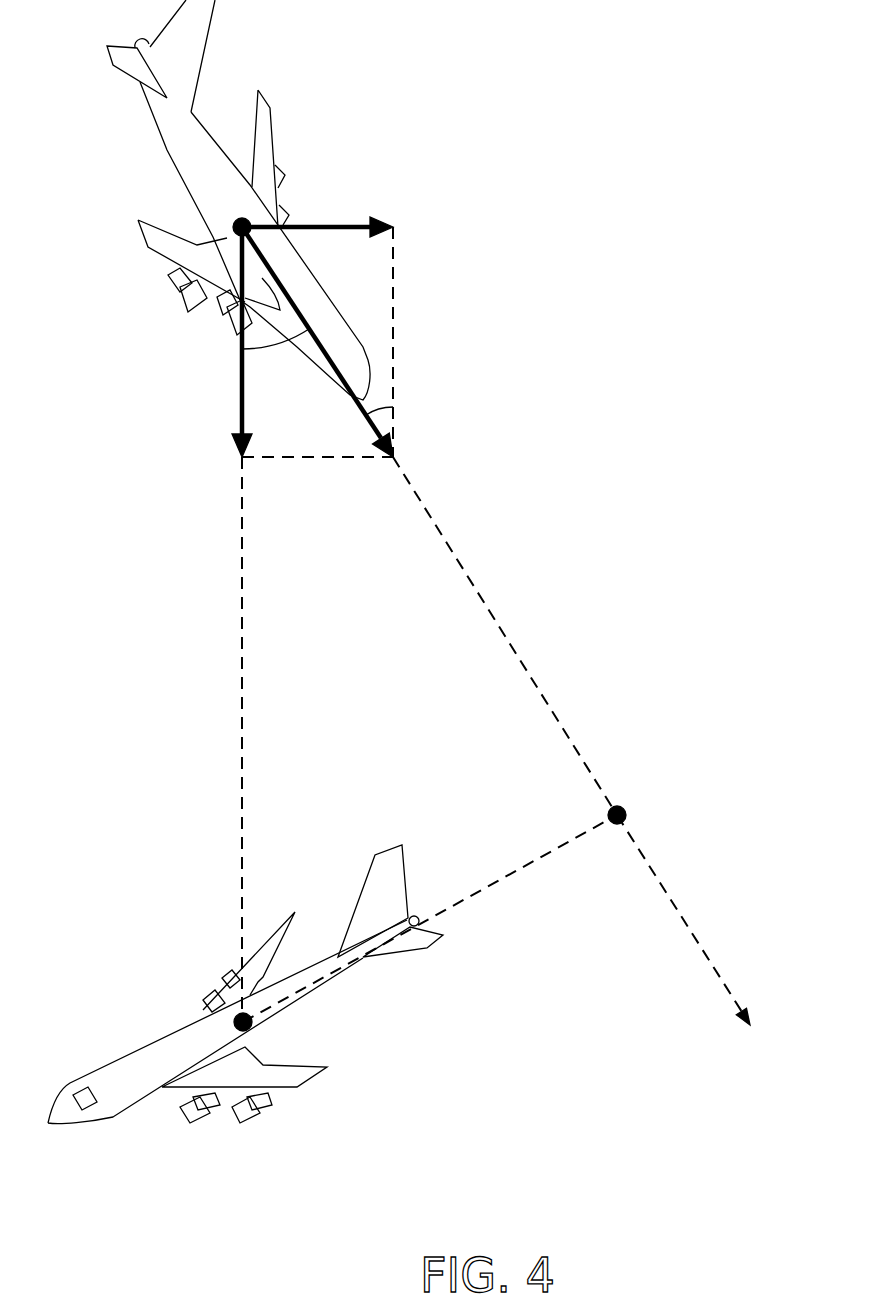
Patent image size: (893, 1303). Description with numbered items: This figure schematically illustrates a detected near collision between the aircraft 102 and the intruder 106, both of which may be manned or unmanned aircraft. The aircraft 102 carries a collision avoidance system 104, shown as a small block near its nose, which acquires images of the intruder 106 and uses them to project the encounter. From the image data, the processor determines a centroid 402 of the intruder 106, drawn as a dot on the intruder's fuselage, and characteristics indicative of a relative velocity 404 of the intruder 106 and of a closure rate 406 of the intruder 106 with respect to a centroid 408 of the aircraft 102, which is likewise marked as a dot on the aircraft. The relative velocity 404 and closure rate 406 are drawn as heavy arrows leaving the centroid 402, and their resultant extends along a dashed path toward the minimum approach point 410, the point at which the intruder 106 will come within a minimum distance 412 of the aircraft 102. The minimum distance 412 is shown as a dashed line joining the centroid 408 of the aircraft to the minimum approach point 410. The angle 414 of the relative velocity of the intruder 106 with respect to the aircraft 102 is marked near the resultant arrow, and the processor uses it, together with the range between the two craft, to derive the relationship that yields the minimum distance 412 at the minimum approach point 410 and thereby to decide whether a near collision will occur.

The aircraft 102 is at (313, 963).
The collision avoidance system 104 is at (90, 1108).
The intruder 106 is at (222, 140).
The centroid of the intruder 402 is at (233, 222).
The relative velocity of the intruder 404 is at (344, 223).
The closure rate of the intruder 406 is at (242, 373).
The centroid of the aircraft 408 is at (234, 1021).
The minimum approach point 410 is at (620, 824).
The minimum distance 412 is at (548, 854).
The angle of the relative velocity 414 is at (383, 386).